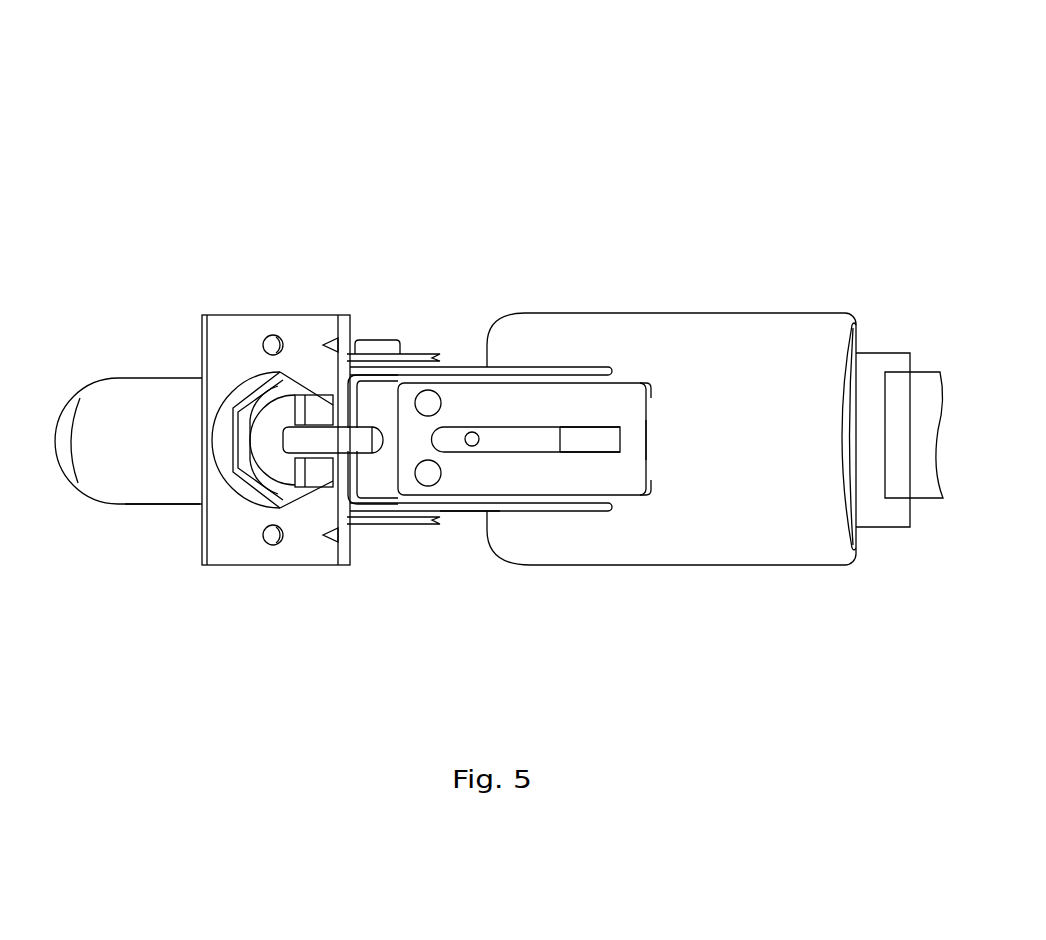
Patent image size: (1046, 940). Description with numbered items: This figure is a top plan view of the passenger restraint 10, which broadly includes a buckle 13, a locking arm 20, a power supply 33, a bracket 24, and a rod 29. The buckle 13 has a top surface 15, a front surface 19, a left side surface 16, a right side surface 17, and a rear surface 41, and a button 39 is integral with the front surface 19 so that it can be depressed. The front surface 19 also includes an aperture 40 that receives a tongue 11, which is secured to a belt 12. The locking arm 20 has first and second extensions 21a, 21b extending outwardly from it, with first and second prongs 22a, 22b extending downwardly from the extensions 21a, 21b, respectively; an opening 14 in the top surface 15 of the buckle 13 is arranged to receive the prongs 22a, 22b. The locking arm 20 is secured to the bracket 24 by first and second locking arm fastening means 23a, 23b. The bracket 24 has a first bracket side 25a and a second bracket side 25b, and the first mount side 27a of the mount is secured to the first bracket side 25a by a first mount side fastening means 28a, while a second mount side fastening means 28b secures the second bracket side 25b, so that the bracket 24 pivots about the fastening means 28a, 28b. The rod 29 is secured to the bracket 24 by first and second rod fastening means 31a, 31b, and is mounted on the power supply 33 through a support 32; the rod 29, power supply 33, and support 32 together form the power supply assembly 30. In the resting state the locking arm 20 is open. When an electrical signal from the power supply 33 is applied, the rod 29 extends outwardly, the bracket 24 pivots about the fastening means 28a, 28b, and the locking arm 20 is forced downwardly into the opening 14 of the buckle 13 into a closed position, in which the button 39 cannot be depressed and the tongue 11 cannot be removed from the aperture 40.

The passenger restraint 10 is at (192, 70).
The tongue 11 is at (862, 511).
The belt 12 is at (902, 443).
The buckle 13 is at (500, 527).
The opening 14 is at (650, 435).
The top surface 15 is at (599, 545).
The left side surface 16 is at (787, 566).
The right side surface 17 is at (763, 312).
The front surface 19 is at (858, 553).
The locking arm 20 is at (652, 448).
The first extension 21a is at (591, 483).
The second extension 21b is at (591, 418).
The first prong 22a is at (647, 497).
The second prong 22b is at (647, 383).
The first locking arm fastening means 23a is at (432, 473).
The second locking arm fastening means 23b is at (430, 400).
The bracket 24 is at (608, 293).
The first bracket side 25a is at (550, 512).
The second bracket side 25b is at (550, 366).
The first mount side 27a is at (415, 601).
The first mount side fastening means 28a is at (388, 526).
The second mount side fastening means 28b is at (377, 340).
The rod 29 is at (323, 403).
The power supply assembly 30 is at (143, 358).
The first rod fastening means 31a is at (318, 483).
The second rod fastening means 31b is at (318, 408).
The support 32 is at (347, 330).
The power supply 33 is at (151, 482).
The button 39 is at (852, 390).
The aperture 40 is at (860, 352).
The rear surface 41 is at (487, 517).